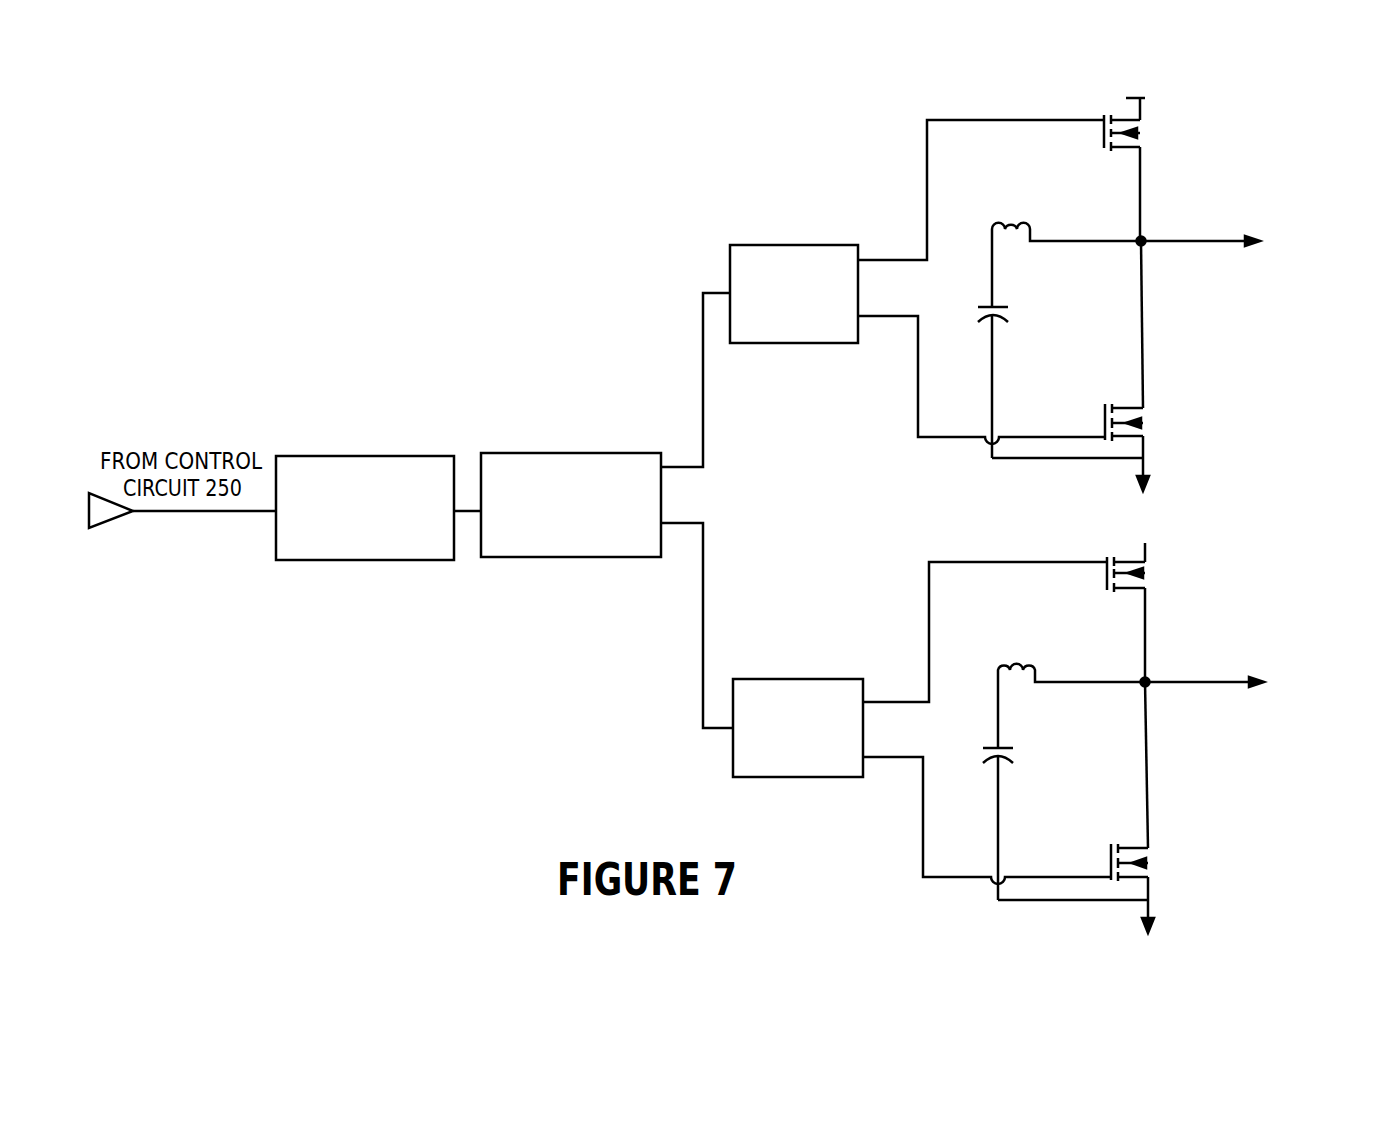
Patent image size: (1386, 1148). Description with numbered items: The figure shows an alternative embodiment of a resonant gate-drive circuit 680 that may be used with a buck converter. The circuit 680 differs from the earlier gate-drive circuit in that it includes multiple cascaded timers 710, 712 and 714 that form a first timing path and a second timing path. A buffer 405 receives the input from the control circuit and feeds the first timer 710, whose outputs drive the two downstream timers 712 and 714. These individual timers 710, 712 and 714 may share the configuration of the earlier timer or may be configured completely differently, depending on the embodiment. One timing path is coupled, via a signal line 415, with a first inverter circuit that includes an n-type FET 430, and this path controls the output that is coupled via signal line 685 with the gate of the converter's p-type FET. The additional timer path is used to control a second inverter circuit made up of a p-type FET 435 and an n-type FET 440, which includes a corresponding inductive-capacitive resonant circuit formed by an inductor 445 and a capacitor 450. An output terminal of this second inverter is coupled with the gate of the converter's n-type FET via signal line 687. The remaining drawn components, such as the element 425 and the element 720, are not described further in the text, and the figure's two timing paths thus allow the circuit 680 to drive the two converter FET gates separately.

The resonant gate-drive circuit 680 is at (583, 172).
The buffer 405 is at (365, 456).
The timer 710 is at (575, 453).
The timer 712 is at (794, 245).
The timer 714 is at (800, 679).
The signal line 415 is at (1140, 118).
The inductor 425 is at (1030, 226).
The n-type FET 430 is at (992, 290).
The signal line 685 is at (1150, 241).
The transistor 720 is at (1147, 410).
The p-type FET 435 is at (1145, 543).
The inductor 445 is at (1035, 666).
The capacitor 450 is at (998, 730).
The signal line 687 is at (1153, 682).
The n-type FET 440 is at (1150, 862).